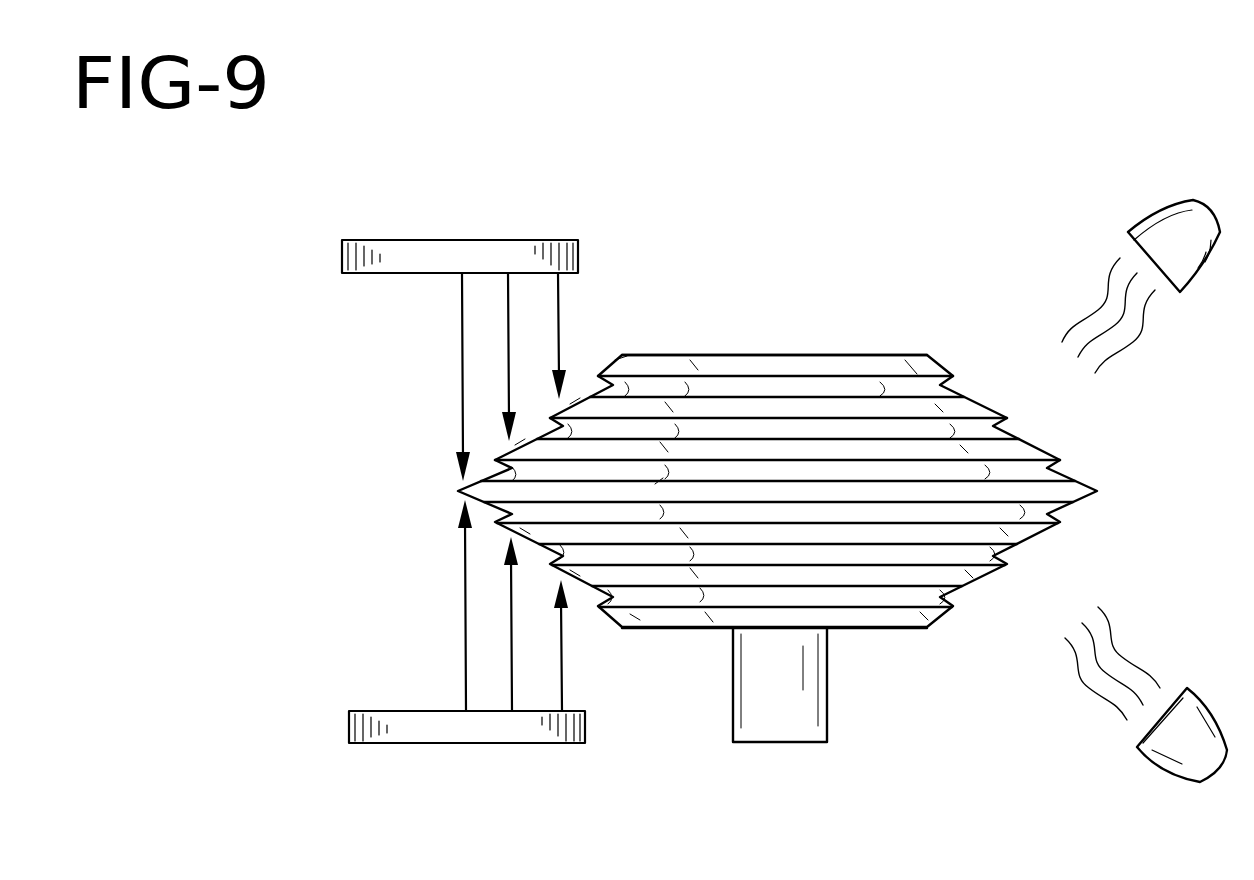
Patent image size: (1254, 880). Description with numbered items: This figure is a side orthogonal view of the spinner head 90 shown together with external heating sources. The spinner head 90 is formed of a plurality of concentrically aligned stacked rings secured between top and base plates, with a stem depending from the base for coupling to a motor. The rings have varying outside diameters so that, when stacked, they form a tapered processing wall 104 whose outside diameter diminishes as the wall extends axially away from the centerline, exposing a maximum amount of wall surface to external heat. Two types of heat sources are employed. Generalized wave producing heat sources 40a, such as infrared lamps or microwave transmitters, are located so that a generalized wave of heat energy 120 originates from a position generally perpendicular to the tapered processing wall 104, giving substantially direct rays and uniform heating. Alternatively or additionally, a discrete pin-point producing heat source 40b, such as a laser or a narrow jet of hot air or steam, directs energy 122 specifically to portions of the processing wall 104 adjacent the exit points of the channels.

The spinner head 90 is at (772, 355).
The processing wall 104 is at (975, 398).
The generalized wave producing heat source 40a is at (1148, 217).
The pin-point producing heat source 40b is at (483, 240).
The wave of heat energy 120 is at (1088, 307).
The energy 122 is at (462, 345).